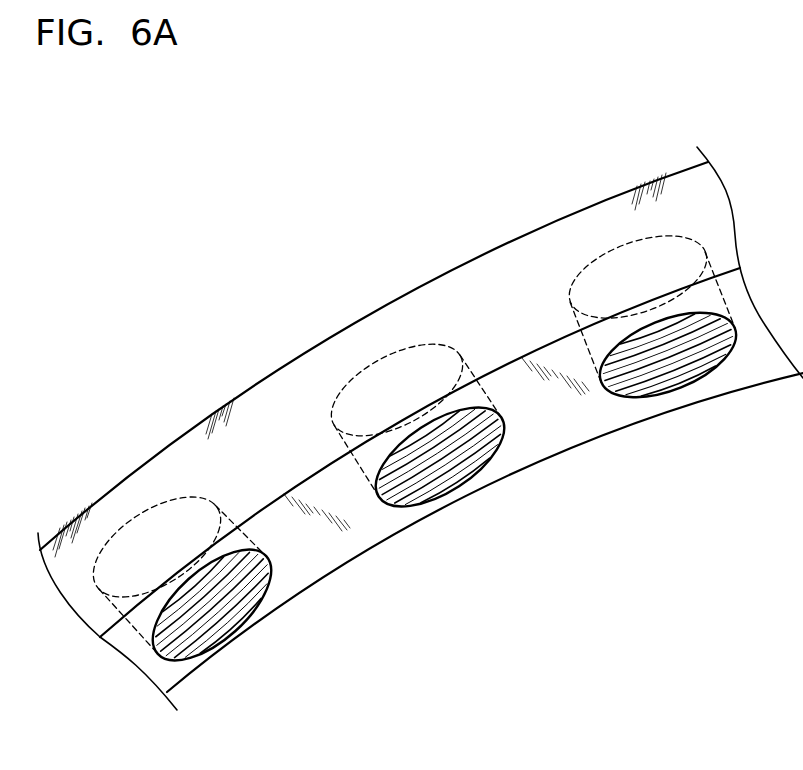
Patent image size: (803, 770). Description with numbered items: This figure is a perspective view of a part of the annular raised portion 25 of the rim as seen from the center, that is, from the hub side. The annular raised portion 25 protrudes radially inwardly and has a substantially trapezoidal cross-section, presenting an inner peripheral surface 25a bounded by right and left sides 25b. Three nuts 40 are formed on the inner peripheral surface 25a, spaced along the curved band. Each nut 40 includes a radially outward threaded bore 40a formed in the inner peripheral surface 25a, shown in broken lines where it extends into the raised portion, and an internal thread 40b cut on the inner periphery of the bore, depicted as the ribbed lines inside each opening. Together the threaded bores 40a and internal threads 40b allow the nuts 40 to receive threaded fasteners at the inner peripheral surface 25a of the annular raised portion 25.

The annular raised portion 25 is at (420, 448).
The inner peripheral surface 25a is at (337, 563).
The right and left sides 25b is at (262, 398).
The nut 40 is at (441, 508).
The threaded bore 40a is at (110, 598).
The internal thread 40b is at (210, 643).